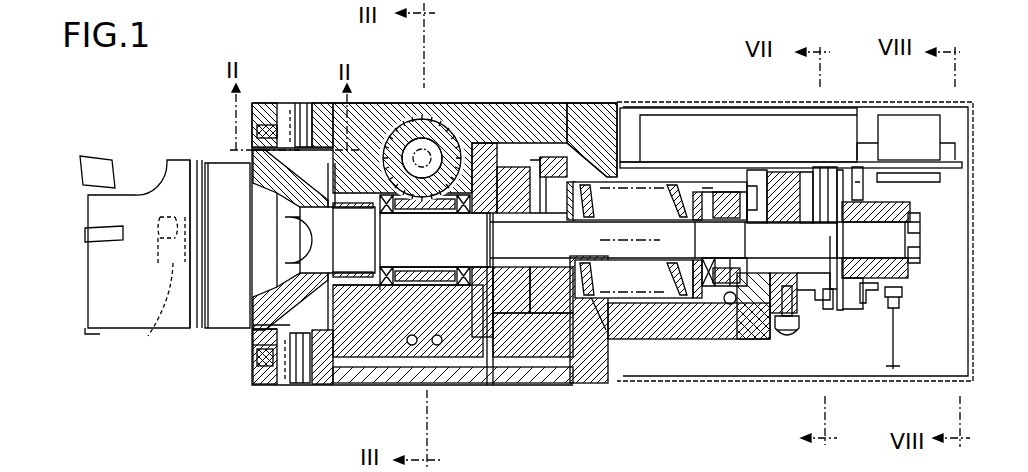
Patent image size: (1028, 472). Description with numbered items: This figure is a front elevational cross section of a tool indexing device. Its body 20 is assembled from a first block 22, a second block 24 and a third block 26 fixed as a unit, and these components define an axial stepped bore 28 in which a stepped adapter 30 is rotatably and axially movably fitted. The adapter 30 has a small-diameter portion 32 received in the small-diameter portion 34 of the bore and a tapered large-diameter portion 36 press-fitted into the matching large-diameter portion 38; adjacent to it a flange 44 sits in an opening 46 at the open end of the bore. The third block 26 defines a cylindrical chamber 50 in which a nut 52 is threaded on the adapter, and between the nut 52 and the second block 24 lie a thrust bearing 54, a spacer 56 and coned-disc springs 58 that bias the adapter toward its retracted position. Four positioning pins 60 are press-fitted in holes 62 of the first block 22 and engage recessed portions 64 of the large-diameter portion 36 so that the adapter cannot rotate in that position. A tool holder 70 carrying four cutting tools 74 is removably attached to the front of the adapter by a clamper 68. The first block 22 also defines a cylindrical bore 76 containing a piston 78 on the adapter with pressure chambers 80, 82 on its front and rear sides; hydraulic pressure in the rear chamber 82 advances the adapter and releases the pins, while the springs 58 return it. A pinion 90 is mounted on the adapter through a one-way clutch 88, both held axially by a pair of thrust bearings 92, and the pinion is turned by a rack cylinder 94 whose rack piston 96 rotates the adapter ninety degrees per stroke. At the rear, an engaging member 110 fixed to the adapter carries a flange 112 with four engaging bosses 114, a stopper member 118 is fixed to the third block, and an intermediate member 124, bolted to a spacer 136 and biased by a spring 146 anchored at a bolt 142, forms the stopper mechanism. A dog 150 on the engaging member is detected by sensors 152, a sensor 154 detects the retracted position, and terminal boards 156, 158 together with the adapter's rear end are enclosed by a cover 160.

The body 20 is at (584, 78).
The first block 22 is at (492, 112).
The second block 24 is at (600, 118).
The third block 26 is at (644, 333).
The stepped bore 28 is at (478, 300).
The adapter 30 is at (370, 296).
The small-diameter portion 32 is at (625, 255).
The small-diameter portion 34 is at (363, 212).
The large-diameter portion 36 is at (310, 288).
The large-diameter portion 38 is at (350, 157).
The flange 44 is at (258, 333).
The opening 46 is at (254, 353).
The cylindrical chamber 50 is at (731, 304).
The nut 52 is at (713, 287).
The thrust bearing 54 is at (708, 205).
The spacer 56 is at (700, 210).
The coned-disc springs 58 is at (671, 190).
The positioning pins 60 is at (305, 125).
The holes 62 is at (313, 110).
The recessed portions 64 is at (297, 132).
The clamper 68 is at (160, 293).
The tool holder 70 is at (176, 175).
The cutting tools 74 is at (98, 165).
The cylindrical bore 76 is at (506, 166).
The piston 78 is at (533, 180).
The pressure chamber 80 is at (474, 157).
The pressure chamber 82 is at (533, 323).
The one-way clutch 88 is at (411, 346).
The pinion 90 is at (438, 346).
The thrust bearings 92 is at (392, 214).
The rack cylinder 94 is at (403, 115).
The rack piston 96 is at (427, 127).
The engaging member 110 is at (908, 210).
The flange 112 is at (829, 300).
The engaging bosses 114 is at (838, 313).
The stopper member 118 is at (773, 284).
The intermediate member 124 is at (824, 300).
The spacer 136 is at (780, 320).
The bolt 142 is at (787, 328).
The spring 146 is at (802, 306).
The dog 150 is at (908, 277).
The sensors 152 is at (896, 318).
The sensor 154 is at (878, 180).
The terminal board 156 is at (790, 133).
The terminal board 158 is at (903, 132).
The cover 160 is at (972, 118).